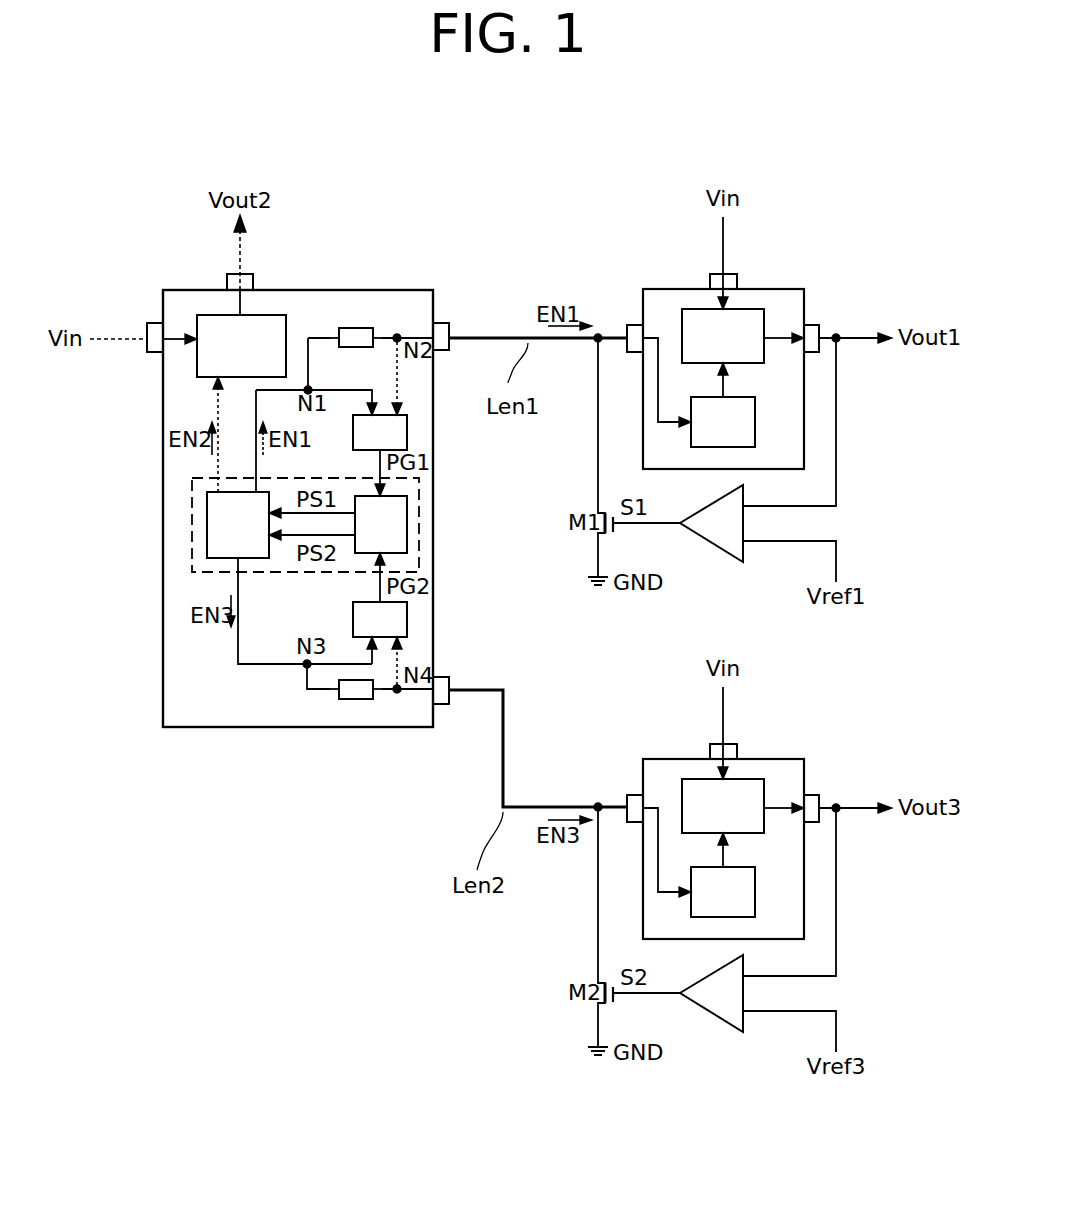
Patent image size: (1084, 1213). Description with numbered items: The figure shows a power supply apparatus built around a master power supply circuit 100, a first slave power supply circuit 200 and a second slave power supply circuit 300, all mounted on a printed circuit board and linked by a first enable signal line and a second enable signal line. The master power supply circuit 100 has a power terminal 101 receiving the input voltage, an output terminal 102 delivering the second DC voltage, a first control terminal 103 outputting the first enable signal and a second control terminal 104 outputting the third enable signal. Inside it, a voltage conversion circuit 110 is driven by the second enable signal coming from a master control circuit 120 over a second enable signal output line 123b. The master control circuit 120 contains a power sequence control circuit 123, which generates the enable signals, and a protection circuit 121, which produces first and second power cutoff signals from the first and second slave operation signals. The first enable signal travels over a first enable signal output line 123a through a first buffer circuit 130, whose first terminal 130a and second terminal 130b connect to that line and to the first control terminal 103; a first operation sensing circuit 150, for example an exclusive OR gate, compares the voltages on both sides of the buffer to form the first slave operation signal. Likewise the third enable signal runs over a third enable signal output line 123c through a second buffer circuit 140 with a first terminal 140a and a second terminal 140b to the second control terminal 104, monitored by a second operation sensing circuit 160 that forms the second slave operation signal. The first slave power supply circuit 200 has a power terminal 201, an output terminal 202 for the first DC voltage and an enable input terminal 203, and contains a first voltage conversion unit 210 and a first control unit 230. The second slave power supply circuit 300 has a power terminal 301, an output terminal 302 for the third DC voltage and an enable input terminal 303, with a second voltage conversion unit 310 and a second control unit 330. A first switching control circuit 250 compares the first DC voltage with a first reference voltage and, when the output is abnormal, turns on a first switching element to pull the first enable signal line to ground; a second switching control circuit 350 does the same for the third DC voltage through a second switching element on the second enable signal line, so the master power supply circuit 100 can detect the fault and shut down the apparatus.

The master power supply circuit 100 is at (162, 727).
The power terminal 101 is at (150, 323).
The output terminal 102 is at (232, 274).
The first control terminal 103 is at (450, 323).
The second control terminal 104 is at (450, 677).
The voltage conversion circuit 110 is at (241, 346).
The master control circuit 120 is at (192, 513).
The protection circuit 121 is at (381, 524).
The power sequence control circuit 123 is at (238, 525).
The first enable signal output line 123a is at (308, 337).
The second enable signal output line 123b is at (218, 470).
The third enable signal output line 123c is at (261, 666).
The first buffer circuit 130 is at (360, 328).
The first terminal of first buffer circuit 130a is at (336, 337).
The second terminal of first buffer circuit 130b is at (376, 337).
The second buffer circuit 140 is at (358, 700).
The first terminal of second buffer circuit 140a is at (337, 691).
The second terminal of second buffer circuit 140b is at (377, 691).
The first operation sensing circuit 150 is at (380, 432).
The second operation sensing circuit 160 is at (380, 619).
The first slave power supply circuit 200 is at (804, 289).
The power terminal 201 is at (737, 273).
The output terminal 202 is at (819, 325).
The enable input terminal 203 is at (627, 325).
The first voltage conversion unit 210 is at (723, 336).
The first control unit 230 is at (723, 422).
The first switching control circuit 250 is at (708, 545).
The second slave power supply circuit 300 is at (804, 759).
The power terminal 301 is at (737, 743).
The output terminal 302 is at (819, 795).
The enable input terminal 303 is at (627, 795).
The second voltage conversion unit 310 is at (723, 806).
The second control unit 330 is at (723, 892).
The second switching control circuit 350 is at (708, 1015).